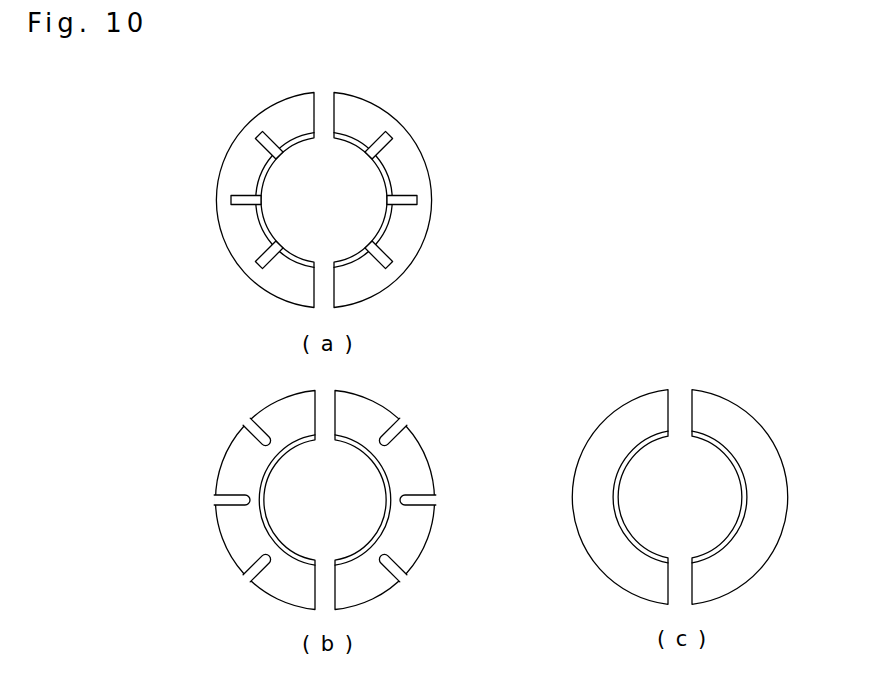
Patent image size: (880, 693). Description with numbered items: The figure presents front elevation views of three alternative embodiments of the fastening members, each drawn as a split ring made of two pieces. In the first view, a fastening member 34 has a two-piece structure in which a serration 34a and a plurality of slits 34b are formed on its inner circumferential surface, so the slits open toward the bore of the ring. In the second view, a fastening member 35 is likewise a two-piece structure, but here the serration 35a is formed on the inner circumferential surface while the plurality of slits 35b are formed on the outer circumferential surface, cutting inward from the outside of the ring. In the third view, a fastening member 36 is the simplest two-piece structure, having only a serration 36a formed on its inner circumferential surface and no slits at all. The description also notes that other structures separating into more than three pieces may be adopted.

The fastening member 34 is at (324, 185).
The serration 34a is at (375, 168).
The slits 34b is at (266, 152).
The fastening member 35 is at (325, 487).
The serration 35a is at (376, 470).
The slits 35b is at (243, 503).
The fastening member 36 is at (678, 483).
The serration 36a is at (632, 468).